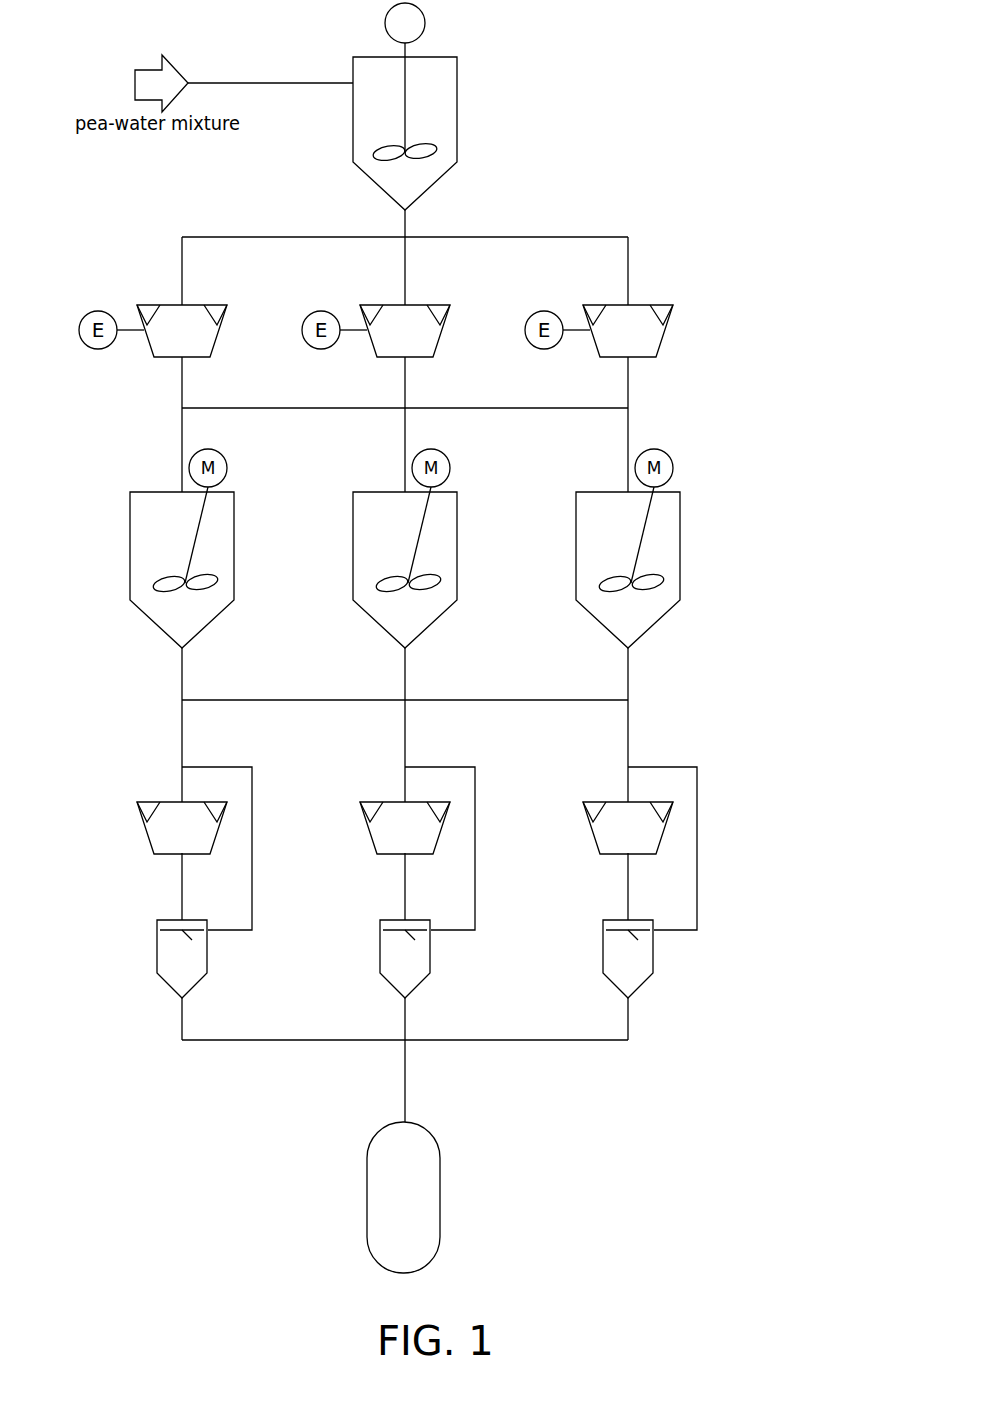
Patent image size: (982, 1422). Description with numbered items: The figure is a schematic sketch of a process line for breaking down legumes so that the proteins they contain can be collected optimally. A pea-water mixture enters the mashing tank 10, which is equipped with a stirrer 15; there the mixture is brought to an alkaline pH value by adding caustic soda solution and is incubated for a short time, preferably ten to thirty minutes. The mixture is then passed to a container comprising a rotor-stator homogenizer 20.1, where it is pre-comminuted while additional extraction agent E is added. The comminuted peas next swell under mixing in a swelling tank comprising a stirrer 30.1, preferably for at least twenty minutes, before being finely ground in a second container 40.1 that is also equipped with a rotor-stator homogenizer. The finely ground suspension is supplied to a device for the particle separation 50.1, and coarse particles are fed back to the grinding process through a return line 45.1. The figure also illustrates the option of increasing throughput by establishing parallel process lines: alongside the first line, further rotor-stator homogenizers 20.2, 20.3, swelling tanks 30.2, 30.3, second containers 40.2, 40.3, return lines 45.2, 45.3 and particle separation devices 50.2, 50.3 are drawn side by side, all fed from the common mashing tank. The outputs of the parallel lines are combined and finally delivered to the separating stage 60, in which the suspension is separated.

The mashing tank 10 is at (460, 80).
The stirrer 15 is at (443, 150).
The rotor-stator homogenizer 20.1 is at (439, 343).
The rotor-stator homogenizer 20.2 is at (661, 346).
The rotor-stator homogenizer 20.3 is at (214, 343).
The swelling tank comprising a stirrer 30.1 is at (443, 619).
The swelling tank comprising a stirrer 30.2 is at (663, 621).
The swelling tank comprising a stirrer 30.3 is at (219, 619).
The second container 40.1 is at (438, 829).
The second container 40.2 is at (658, 831).
The second container 40.3 is at (214, 829).
The return line 45.1 is at (479, 785).
The return line 45.2 is at (701, 795).
The return line 45.3 is at (256, 788).
The device for the particle separation 50.1 is at (434, 964).
The device for the particle separation 50.2 is at (658, 966).
The device for the particle separation 50.3 is at (211, 964).
The separating stage 60 is at (364, 1172).